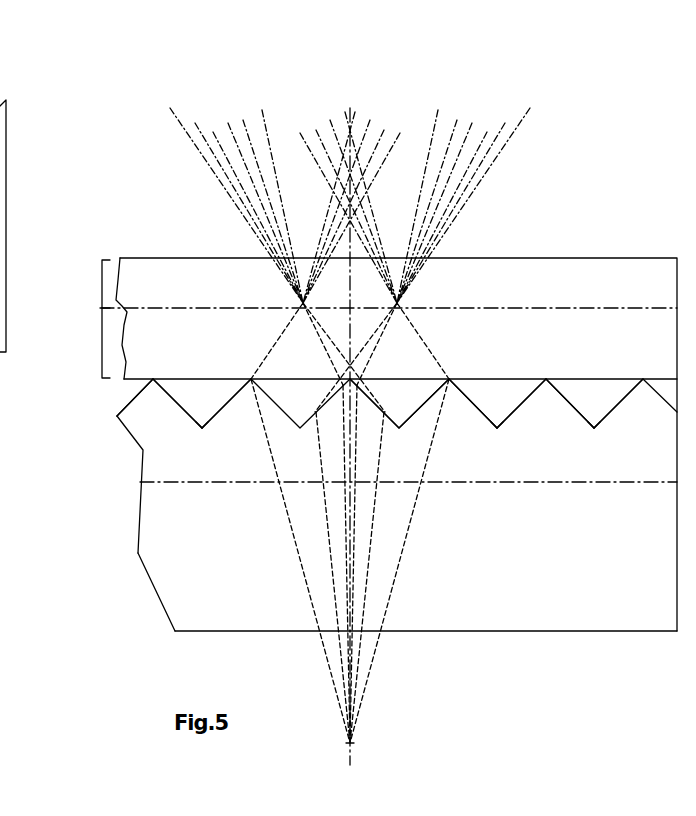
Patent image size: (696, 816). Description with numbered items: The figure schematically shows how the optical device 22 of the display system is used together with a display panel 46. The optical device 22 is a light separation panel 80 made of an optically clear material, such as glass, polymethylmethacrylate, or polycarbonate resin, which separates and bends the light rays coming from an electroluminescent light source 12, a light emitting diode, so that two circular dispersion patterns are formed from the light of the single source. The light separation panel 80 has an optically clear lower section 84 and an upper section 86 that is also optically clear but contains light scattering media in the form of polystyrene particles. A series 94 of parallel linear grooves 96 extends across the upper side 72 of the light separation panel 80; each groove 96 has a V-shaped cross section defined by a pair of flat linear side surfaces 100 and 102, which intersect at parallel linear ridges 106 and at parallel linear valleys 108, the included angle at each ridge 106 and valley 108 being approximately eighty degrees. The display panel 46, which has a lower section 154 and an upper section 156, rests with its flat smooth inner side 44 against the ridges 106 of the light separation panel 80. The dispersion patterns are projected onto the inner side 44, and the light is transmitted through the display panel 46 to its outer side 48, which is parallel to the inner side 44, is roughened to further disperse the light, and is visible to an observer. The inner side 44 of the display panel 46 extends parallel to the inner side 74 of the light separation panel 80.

The electroluminescent light source 12 is at (350, 752).
The optical device 22 is at (76, 541).
The inner side of display panel 44 is at (130, 386).
The display panel 46 is at (500, 256).
The outer side of display panel 48 is at (580, 257).
The upper side of light separation panel 72 is at (479, 385).
The inner side of light separation panel 74 is at (456, 632).
The light separation panel 80 is at (8, 141).
The lower section of light separation panel 84 is at (190, 580).
The upper section of light separation panel 86 is at (143, 423).
The series of grooves 94 is at (570, 340).
The groove 96 is at (203, 403).
The side surface 100 is at (178, 407).
The side surface 102 is at (130, 402).
The ridge 106 is at (154, 378).
The valley 108 is at (205, 432).
The lower section of display panel 154 is at (102, 338).
The upper section of display panel 156 is at (102, 282).